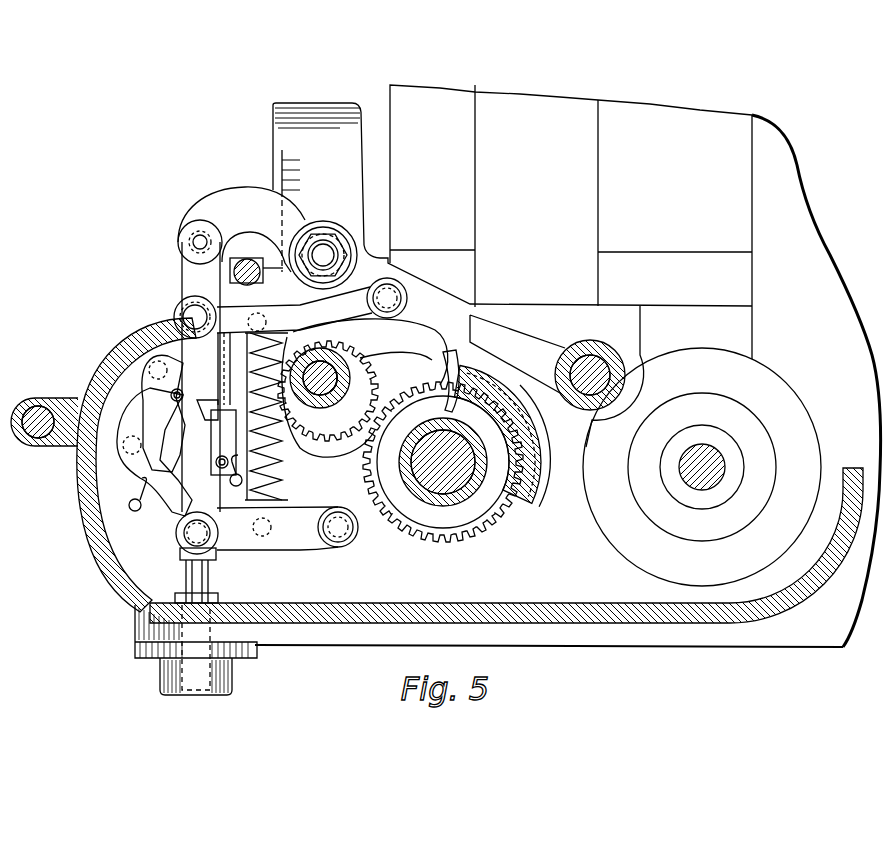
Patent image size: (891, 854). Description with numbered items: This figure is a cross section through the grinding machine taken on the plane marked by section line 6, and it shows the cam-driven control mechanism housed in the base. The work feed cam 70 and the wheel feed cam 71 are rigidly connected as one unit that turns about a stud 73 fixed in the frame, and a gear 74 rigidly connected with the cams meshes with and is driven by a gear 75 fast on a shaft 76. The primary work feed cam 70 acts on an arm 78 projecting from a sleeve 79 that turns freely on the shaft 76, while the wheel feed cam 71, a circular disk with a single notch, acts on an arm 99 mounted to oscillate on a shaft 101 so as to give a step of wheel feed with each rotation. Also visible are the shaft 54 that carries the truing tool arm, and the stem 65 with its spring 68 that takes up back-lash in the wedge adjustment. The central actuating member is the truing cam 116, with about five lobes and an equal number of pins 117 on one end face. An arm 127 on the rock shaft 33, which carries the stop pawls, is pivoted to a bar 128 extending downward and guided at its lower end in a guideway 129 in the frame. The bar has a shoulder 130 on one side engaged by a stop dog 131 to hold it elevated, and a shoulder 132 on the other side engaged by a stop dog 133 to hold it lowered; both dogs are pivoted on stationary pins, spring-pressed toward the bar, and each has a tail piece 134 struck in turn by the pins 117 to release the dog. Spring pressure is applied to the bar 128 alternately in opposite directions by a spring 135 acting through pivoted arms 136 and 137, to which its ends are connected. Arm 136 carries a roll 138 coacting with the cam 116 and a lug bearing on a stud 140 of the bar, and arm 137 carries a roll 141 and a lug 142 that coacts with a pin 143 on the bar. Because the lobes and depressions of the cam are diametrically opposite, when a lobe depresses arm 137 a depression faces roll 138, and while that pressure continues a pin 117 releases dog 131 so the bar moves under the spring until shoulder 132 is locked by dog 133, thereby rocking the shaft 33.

The section line 6 is at (201, 275).
The rock-shaft 33 is at (325, 252).
The shaft 54 is at (696, 487).
The stem 65 is at (254, 262).
The spring 68 is at (244, 259).
The work feed cam 70 is at (447, 356).
The wheel feed cam 71 is at (540, 433).
The stud 73 is at (402, 520).
The gear 74 is at (340, 518).
The gear 75 is at (335, 432).
The shaft 76 is at (327, 392).
The arm 78 is at (410, 326).
The sleeve 79 is at (313, 396).
The arm 99 is at (513, 340).
The shaft 101 is at (604, 368).
The truing cam 116 is at (142, 426).
The pins 117 is at (140, 462).
The arm 127 is at (225, 206).
The bar 128 is at (190, 279).
The guideway 129 is at (218, 598).
The shoulder 130 is at (216, 405).
The stop dog 131 is at (222, 420).
The shoulder 132 is at (214, 418).
The stop dog 133 is at (172, 420).
The tail piece 134 is at (200, 372).
The spring 135 is at (279, 453).
The arm 136 is at (240, 320).
The arm 137 is at (247, 538).
The roll 138 is at (180, 311).
The stud 140 is at (252, 367).
The roll 141 is at (183, 558).
The lug 142 is at (184, 540).
The pin 143 is at (222, 483).